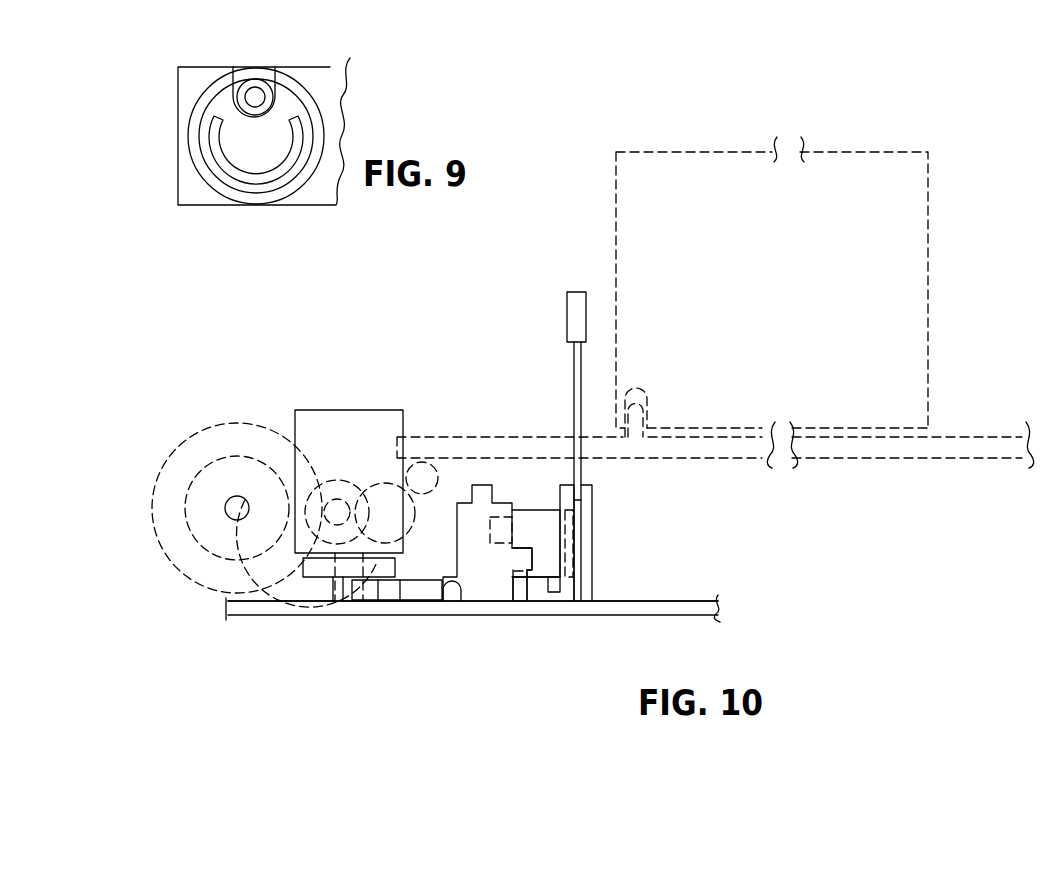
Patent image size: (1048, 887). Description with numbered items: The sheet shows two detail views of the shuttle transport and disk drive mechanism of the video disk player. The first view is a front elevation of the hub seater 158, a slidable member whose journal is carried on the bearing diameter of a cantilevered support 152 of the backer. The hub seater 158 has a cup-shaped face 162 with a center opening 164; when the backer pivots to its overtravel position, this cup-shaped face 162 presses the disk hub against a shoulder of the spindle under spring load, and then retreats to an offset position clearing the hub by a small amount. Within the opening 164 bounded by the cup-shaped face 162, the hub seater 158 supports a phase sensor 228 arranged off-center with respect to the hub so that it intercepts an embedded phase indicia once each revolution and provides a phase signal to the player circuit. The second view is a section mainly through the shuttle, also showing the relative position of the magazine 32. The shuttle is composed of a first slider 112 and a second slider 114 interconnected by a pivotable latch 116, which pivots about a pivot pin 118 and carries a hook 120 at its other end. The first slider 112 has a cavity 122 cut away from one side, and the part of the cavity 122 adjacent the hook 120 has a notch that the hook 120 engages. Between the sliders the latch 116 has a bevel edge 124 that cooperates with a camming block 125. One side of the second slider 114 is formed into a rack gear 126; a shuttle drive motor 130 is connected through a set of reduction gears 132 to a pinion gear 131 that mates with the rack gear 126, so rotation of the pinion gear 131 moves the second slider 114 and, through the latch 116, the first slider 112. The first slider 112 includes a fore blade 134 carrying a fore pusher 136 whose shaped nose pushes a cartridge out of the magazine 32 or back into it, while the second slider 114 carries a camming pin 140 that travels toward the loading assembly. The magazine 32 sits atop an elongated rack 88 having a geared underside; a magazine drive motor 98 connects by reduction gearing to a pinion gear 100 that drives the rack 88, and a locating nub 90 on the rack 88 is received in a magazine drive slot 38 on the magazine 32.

In FIG. 9, the cantilevered support 152 is at (328, 97).
In FIG. 9, the hub seater 158 is at (297, 96).
In FIG. 9, the cup-shaped face 162 is at (303, 132).
In FIG. 9, the center opening 164 is at (230, 133).
In FIG. 9, the phase sensor 228 is at (258, 105).
In FIG. 10, the shuttle drive motor 130 is at (342, 410).
In FIG. 10, the magazine drive motor 98 is at (240, 455).
In FIG. 10, the pinion gear 100 is at (431, 492).
In FIG. 10, the second slider 114 is at (468, 547).
In FIG. 10, the pinion gear 131 is at (408, 600).
In FIG. 10, the rack gear 126 is at (458, 596).
In FIG. 10, the reduction gears 132 is at (322, 595).
In FIG. 10, the camming pin 140 is at (483, 487).
In FIG. 10, the pivot pin 118 is at (495, 530).
In FIG. 10, the pivotable latch 116 is at (533, 518).
In FIG. 10, the bevel edge 124 is at (510, 558).
In FIG. 10, the camming block 125 is at (520, 589).
In FIG. 10, the first slider 112 is at (593, 576).
In FIG. 10, the cavity 122 is at (573, 507).
In FIG. 10, the hook 120 is at (590, 527).
In FIG. 10, the fore blade 134 is at (573, 393).
In FIG. 10, the fore pusher 136 is at (567, 300).
In FIG. 10, the rack 88 is at (812, 460).
In FIG. 10, the magazine 32 is at (920, 247).
In FIG. 10, the magazine drive slot 38 is at (640, 387).
In FIG. 10, the locating nub 90 is at (647, 413).